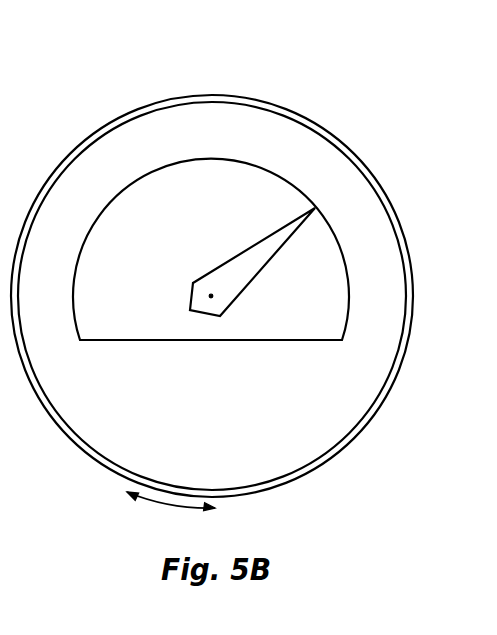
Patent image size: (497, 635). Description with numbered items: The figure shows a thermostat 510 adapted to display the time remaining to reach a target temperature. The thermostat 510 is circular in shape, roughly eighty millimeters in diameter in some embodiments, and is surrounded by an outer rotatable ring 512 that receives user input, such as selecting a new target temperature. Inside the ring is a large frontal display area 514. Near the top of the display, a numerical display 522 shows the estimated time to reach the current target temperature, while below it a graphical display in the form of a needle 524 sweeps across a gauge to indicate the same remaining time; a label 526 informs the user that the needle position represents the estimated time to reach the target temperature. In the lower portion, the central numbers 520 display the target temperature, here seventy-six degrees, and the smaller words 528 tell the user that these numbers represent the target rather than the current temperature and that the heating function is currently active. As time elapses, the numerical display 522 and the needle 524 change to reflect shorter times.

The thermostat 510 is at (292, 93).
The outer rotatable ring 512 is at (107, 462).
The frontal display area 514 is at (290, 445).
The central numbers 520 is at (150, 374).
The numerical display 522 is at (200, 111).
The needle 524 is at (235, 288).
The label 526 is at (266, 344).
The smaller words 528 is at (211, 447).